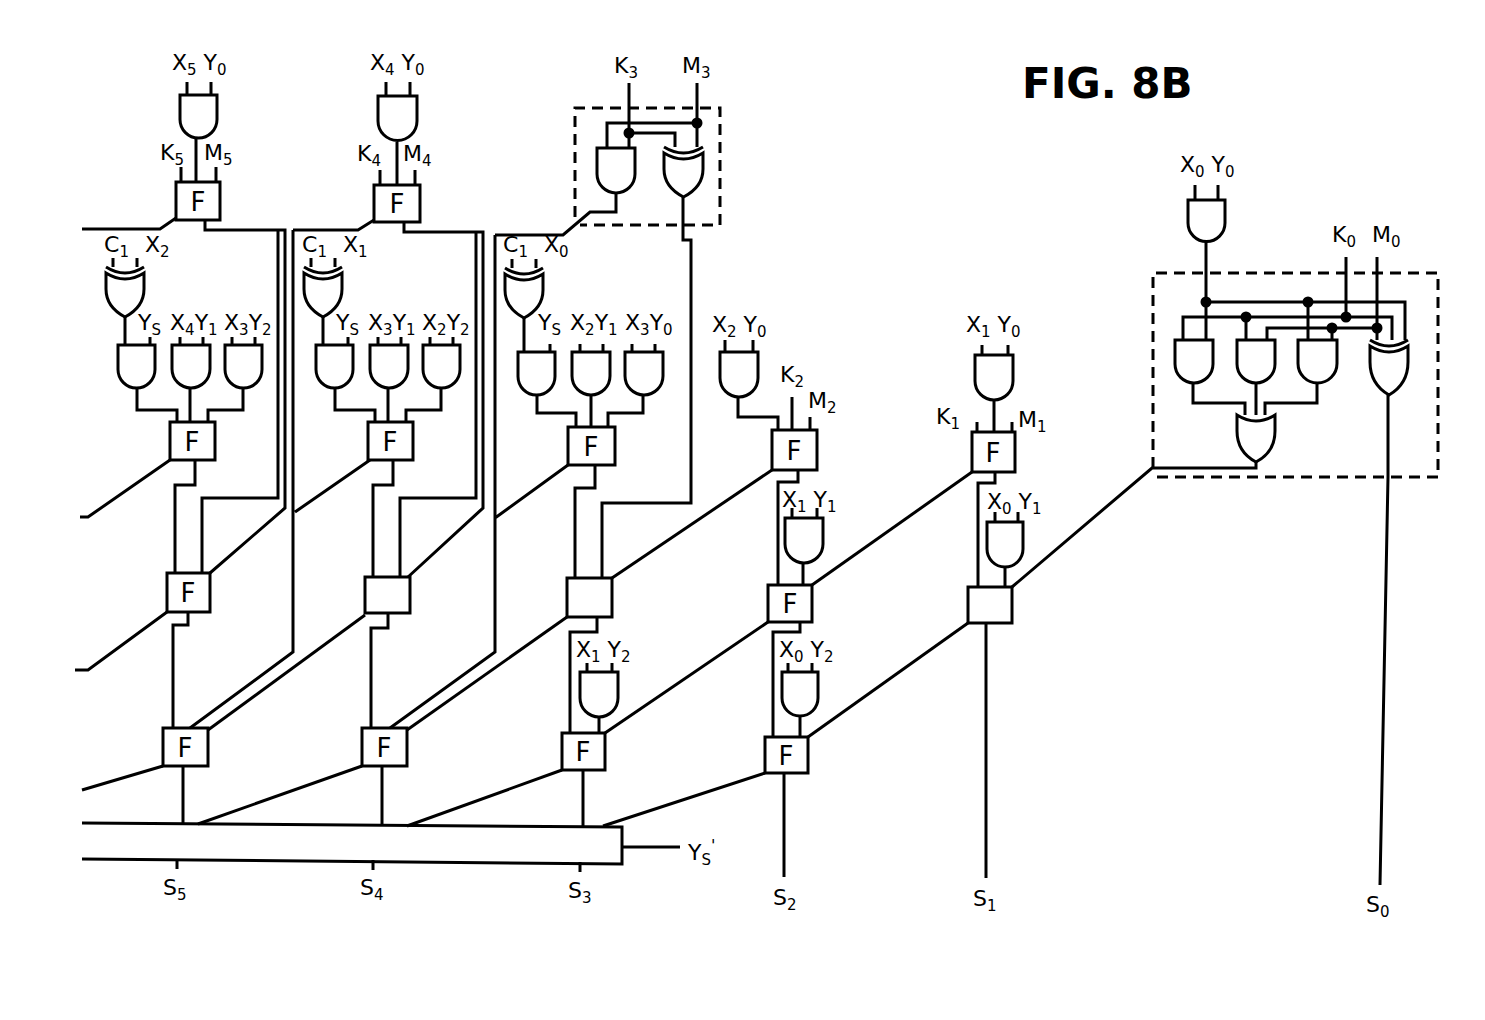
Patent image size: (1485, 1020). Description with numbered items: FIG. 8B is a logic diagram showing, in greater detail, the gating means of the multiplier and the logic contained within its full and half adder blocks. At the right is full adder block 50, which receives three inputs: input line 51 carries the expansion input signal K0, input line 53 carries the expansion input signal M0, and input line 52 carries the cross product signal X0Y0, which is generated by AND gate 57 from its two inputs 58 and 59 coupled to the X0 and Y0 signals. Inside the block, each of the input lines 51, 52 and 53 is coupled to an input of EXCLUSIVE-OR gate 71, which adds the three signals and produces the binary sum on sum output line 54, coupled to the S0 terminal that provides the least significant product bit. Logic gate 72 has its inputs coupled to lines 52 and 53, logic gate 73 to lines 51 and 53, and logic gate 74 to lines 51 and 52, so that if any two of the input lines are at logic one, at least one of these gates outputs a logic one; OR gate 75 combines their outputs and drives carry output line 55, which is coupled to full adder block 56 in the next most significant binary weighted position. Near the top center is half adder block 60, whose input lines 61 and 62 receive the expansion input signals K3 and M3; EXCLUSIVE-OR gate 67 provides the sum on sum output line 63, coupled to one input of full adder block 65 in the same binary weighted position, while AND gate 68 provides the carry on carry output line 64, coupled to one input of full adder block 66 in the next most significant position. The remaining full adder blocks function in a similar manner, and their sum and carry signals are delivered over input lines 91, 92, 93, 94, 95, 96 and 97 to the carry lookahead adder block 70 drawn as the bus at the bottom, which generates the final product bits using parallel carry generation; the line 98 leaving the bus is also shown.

The full adder block 50 is at (1153, 275).
The input line 51 is at (1346, 266).
The input line 52 is at (1206, 260).
The input line 53 is at (1377, 266).
The sum output line 54 is at (1382, 503).
The carry output line 55 is at (1130, 489).
The full adder block 56 is at (1012, 615).
The AND gate 57 is at (1188, 222).
The input 58 is at (1195, 190).
The input 59 is at (1218, 190).
The half adder block 60 is at (575, 113).
The input line 61 is at (625, 96).
The input line 62 is at (697, 95).
The sum output line 63 is at (691, 250).
The carry output line 64 is at (533, 235).
The full adder block 65 is at (612, 608).
The full adder block 66 is at (410, 605).
The EXCLUSIVE-OR gate 67 is at (703, 158).
The AND gate 68 is at (597, 157).
The carry lookahead adder block 70 is at (622, 862).
The EXCLUSIVE-OR gate 71 is at (1406, 385).
The logic gate 72 is at (1334, 382).
The logic gate 73 is at (1272, 382).
The logic gate 74 is at (1210, 382).
The OR gate 75 is at (1272, 456).
The input line 91 is at (128, 778).
The input line 92 is at (183, 787).
The input line 93 is at (325, 778).
The input line 94 is at (382, 787).
The input line 95 is at (515, 782).
The input line 96 is at (583, 793).
The input line 97 is at (720, 787).
The Y's output line 98 is at (657, 845).